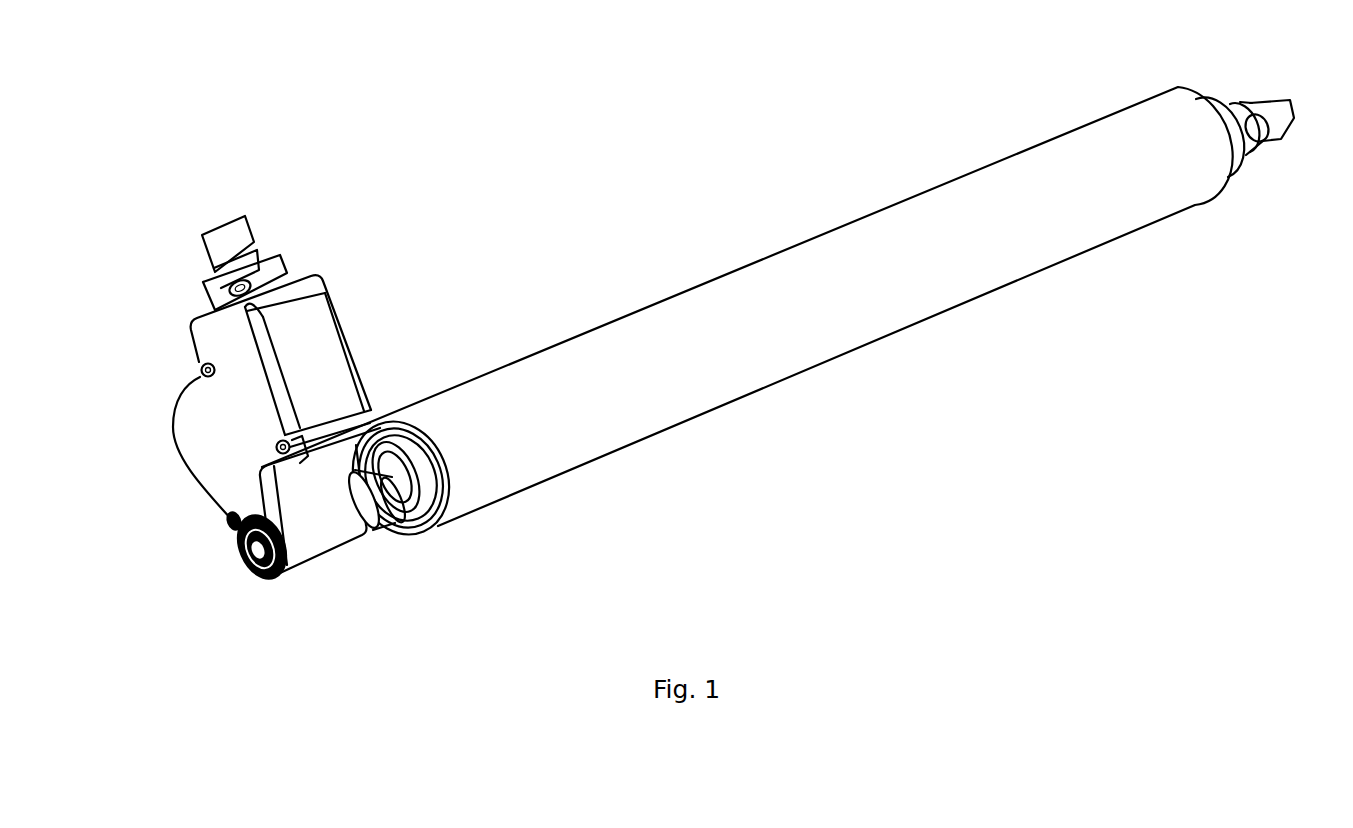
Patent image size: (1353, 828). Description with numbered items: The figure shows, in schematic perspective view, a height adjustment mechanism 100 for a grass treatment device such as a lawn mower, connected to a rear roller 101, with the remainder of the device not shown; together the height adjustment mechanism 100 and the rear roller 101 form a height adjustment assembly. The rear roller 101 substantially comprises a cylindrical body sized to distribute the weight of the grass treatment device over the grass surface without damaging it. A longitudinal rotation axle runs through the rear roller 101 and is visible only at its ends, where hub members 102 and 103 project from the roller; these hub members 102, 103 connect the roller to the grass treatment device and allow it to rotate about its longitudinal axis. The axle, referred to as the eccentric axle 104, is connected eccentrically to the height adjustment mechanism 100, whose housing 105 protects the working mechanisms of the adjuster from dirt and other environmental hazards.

The height adjustment mechanism 100 is at (702, 347).
The rear roller 101 is at (738, 270).
The hub member 102 is at (1237, 173).
The hub member 103 is at (422, 530).
The eccentric axle 104 is at (392, 470).
The housing 105 is at (198, 440).